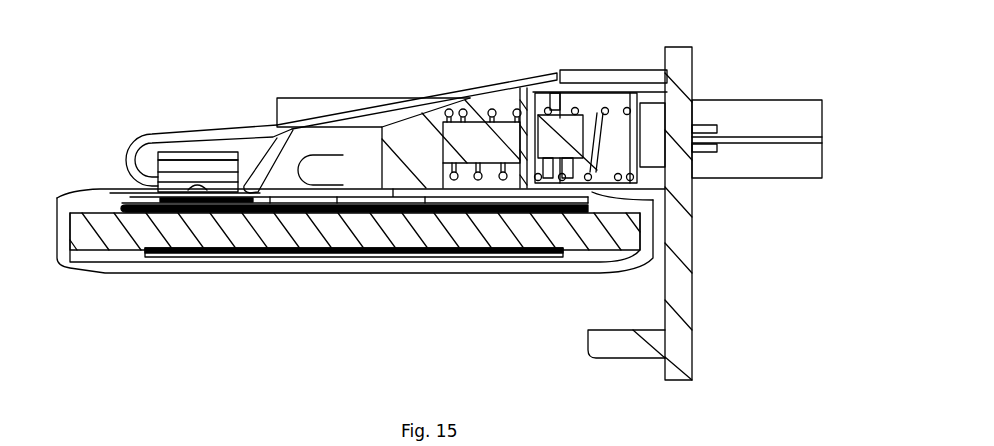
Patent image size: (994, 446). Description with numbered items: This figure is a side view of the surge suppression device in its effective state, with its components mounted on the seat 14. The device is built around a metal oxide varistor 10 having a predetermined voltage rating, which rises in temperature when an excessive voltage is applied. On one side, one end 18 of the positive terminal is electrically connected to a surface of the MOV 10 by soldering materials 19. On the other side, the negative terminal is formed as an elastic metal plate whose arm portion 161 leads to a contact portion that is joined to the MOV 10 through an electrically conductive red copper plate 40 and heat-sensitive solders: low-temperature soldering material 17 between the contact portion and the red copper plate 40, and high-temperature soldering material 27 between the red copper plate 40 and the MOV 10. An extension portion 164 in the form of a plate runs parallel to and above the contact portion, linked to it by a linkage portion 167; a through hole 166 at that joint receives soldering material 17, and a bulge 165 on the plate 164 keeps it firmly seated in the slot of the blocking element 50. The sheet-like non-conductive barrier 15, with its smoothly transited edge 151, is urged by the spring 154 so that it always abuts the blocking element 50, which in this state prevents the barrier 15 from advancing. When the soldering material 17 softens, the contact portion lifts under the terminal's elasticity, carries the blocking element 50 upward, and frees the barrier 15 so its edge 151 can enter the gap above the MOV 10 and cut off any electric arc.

The metal oxide varistor 10 is at (467, 240).
The seat 14 is at (697, 305).
The non-conductive barrier 15 is at (403, 177).
The low-temperature soldering material 17 is at (137, 203).
The end of the positive terminal 18 is at (358, 255).
The soldering materials 19 is at (143, 254).
The high-temperature soldering material 27 is at (118, 208).
The red copper plate 40 is at (128, 206).
The blocking element 50 is at (140, 152).
The edge 151 is at (302, 163).
The spring 154 is at (627, 110).
The arm portion 161 is at (512, 95).
The extension portion 164 is at (205, 160).
The bulge 165 is at (192, 158).
The through hole 166 is at (207, 188).
The linkage portion 167 is at (240, 177).